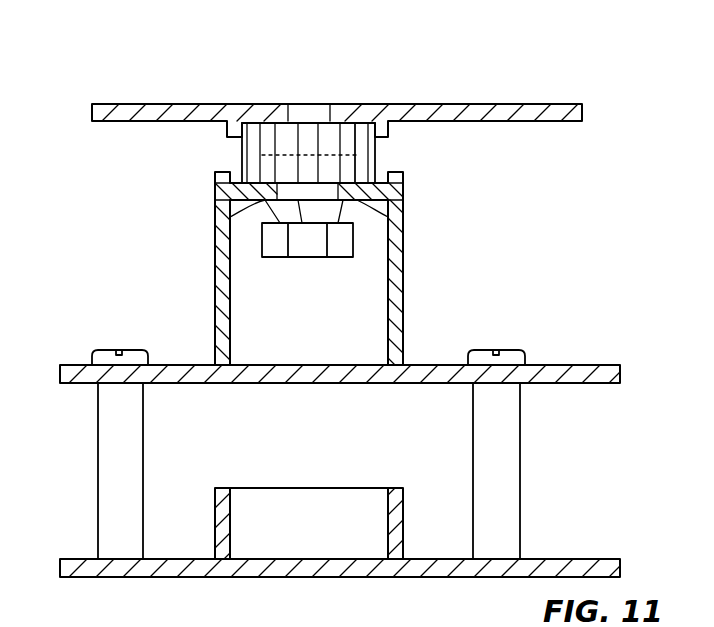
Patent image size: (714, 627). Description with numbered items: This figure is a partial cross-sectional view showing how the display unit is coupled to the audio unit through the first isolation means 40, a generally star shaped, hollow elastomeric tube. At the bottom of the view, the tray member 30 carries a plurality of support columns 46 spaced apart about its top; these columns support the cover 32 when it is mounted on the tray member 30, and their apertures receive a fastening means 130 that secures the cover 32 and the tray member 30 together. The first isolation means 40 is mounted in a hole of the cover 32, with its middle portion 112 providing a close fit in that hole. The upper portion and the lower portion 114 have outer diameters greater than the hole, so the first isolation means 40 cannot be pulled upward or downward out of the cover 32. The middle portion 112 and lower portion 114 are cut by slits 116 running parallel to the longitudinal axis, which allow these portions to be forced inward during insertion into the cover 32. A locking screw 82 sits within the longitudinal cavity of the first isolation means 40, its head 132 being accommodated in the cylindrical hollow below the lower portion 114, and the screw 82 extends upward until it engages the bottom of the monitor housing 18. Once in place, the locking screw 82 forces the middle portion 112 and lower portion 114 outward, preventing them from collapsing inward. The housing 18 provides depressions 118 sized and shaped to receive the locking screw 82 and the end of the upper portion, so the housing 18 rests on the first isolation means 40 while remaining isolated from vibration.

The monitor housing 18 is at (193, 112).
The locking screw 82 is at (317, 107).
The depressions 118 is at (363, 120).
The slits 116 is at (380, 155).
The first isolation means 40 is at (215, 153).
The lower portion 114 is at (230, 220).
The middle portion 112 is at (402, 220).
The head 132 is at (323, 257).
The fastening means 130 is at (113, 350).
The cover 32 is at (540, 368).
The support columns 46 is at (100, 460).
The tray member 30 is at (180, 572).